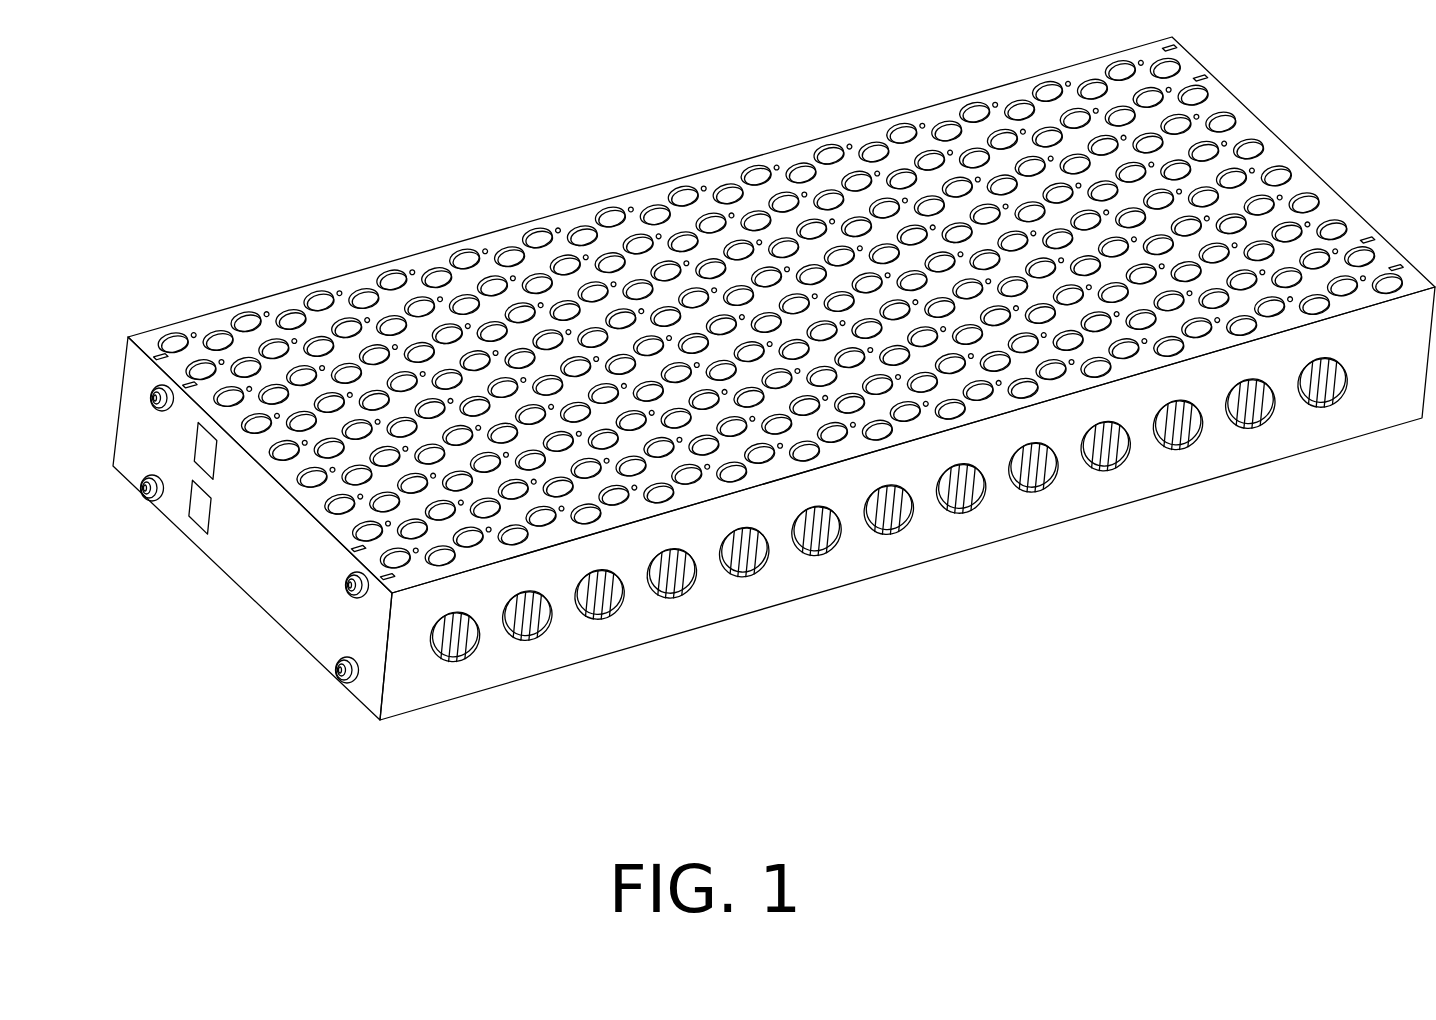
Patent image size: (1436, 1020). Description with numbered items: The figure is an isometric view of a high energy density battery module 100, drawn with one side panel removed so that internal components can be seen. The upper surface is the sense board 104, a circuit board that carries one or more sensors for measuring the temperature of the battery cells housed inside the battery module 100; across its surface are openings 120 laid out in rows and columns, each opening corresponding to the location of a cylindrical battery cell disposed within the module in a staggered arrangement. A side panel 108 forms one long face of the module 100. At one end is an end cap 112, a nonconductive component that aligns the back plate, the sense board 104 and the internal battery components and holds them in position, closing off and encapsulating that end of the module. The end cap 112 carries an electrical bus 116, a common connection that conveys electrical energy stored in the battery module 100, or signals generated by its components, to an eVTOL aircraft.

The battery module 100 is at (751, 413).
The sense board 104 is at (781, 315).
The side panel 108 is at (1177, 478).
The end cap 112 is at (229, 528).
The electrical bus 116 is at (190, 500).
The openings 120 is at (394, 271).